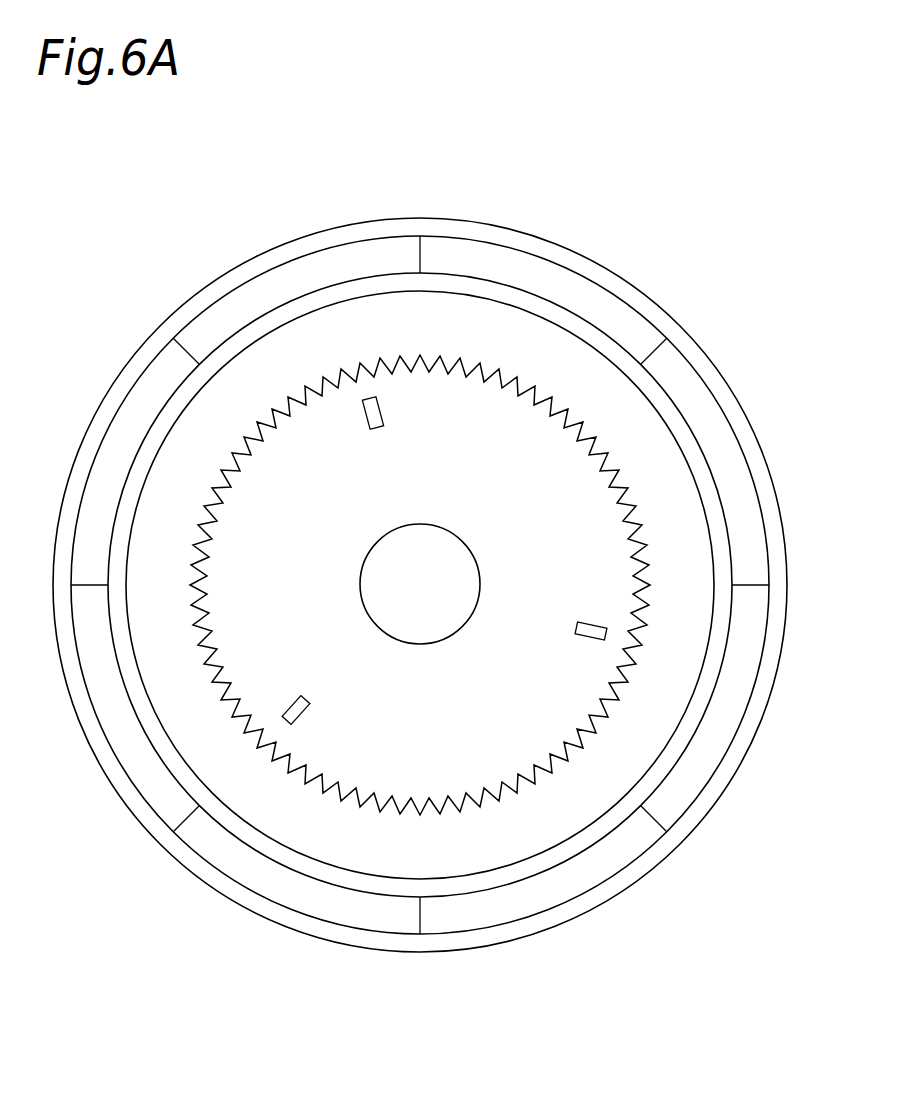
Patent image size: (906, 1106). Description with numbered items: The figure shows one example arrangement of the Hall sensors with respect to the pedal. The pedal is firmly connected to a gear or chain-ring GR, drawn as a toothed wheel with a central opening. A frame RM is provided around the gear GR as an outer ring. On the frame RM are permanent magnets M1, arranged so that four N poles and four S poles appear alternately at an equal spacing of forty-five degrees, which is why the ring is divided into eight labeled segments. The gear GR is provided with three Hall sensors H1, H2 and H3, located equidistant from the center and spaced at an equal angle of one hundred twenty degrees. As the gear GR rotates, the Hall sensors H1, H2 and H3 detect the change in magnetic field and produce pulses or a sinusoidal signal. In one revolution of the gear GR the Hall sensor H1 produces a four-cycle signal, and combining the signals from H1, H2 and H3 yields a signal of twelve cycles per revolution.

The permanent magnets M1 is at (258, 285).
The frame RM is at (675, 843).
The gear GR is at (450, 385).
The Hall sensor H1 is at (365, 410).
The Hall sensor H2 is at (586, 638).
The Hall sensor H3 is at (286, 706).